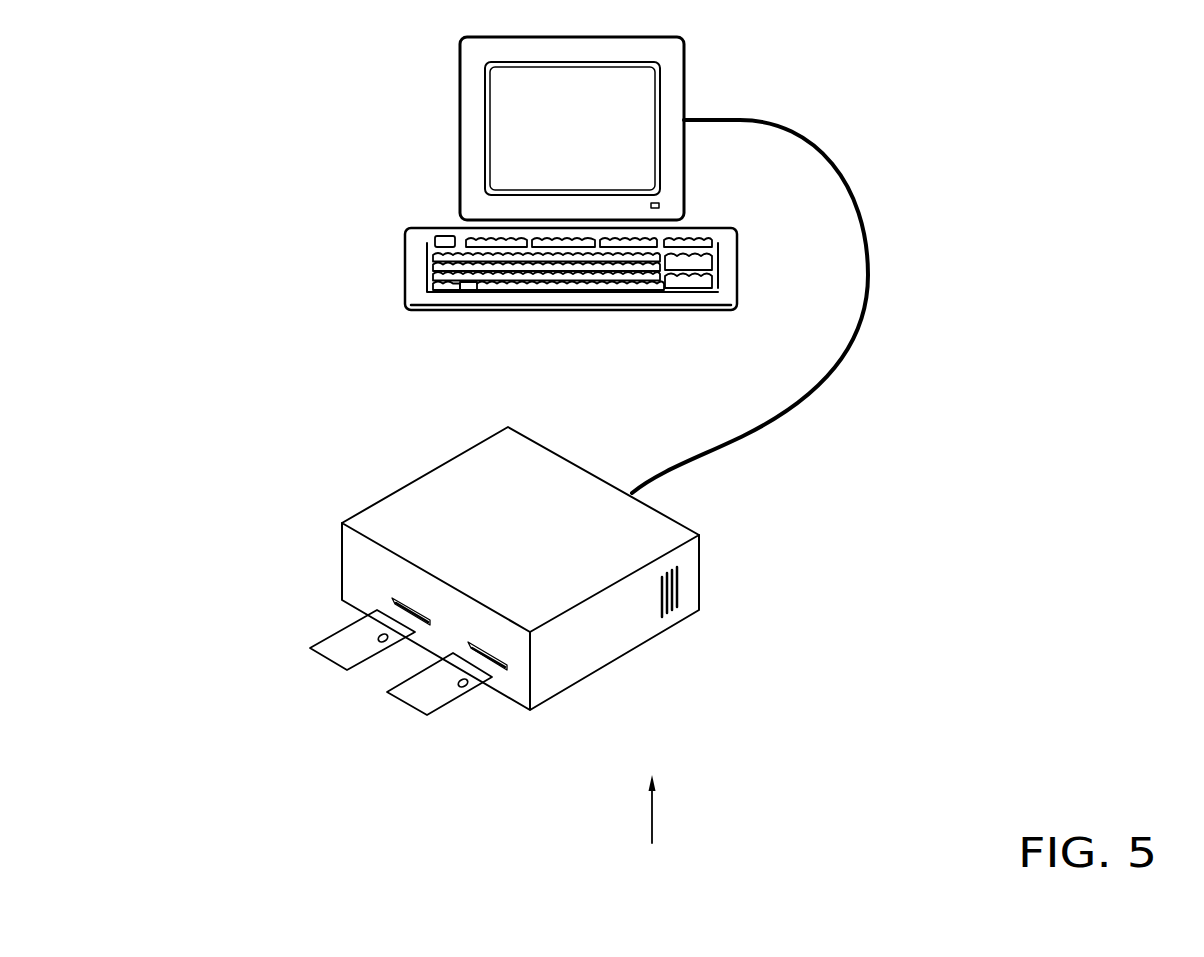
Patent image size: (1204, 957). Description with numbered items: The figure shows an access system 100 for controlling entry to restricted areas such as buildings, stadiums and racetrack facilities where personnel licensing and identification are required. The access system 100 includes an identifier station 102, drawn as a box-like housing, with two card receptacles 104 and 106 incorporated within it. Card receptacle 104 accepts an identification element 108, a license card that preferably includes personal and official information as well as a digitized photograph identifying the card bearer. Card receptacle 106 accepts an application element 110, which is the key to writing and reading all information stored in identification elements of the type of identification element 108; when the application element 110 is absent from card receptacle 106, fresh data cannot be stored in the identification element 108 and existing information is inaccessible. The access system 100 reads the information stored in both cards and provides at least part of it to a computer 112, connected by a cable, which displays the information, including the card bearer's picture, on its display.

The access system 100 is at (650, 828).
The identifier station 102 is at (443, 487).
The card receptacle 104 is at (493, 673).
The card receptacle 106 is at (392, 602).
The identification element 108 is at (425, 698).
The application element 110 is at (342, 652).
The computer 112 is at (672, 83).